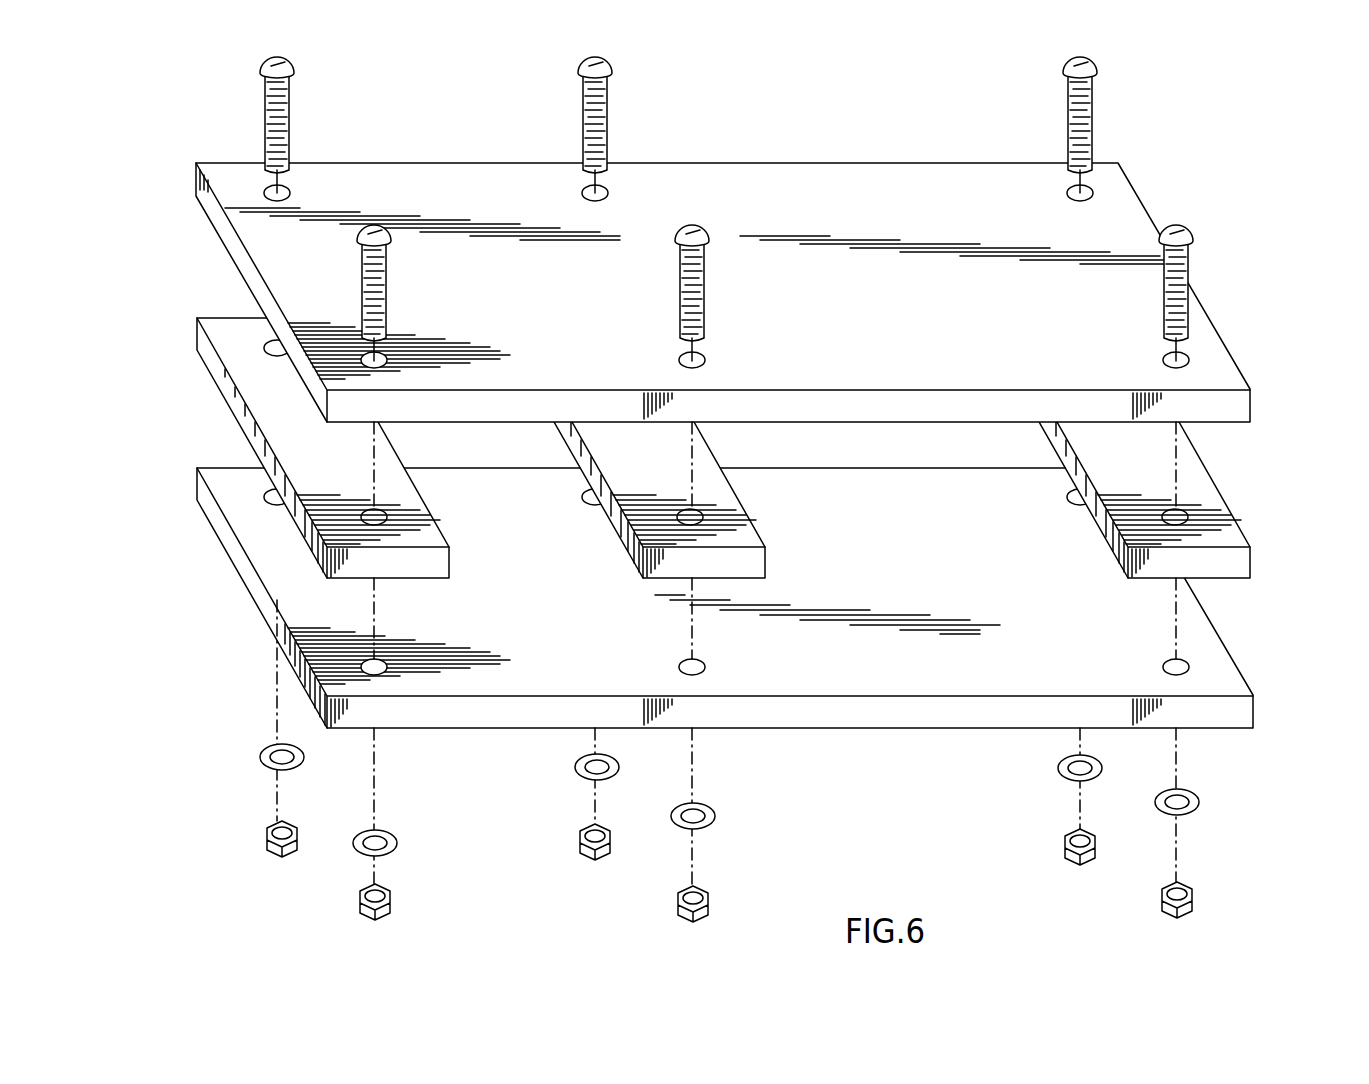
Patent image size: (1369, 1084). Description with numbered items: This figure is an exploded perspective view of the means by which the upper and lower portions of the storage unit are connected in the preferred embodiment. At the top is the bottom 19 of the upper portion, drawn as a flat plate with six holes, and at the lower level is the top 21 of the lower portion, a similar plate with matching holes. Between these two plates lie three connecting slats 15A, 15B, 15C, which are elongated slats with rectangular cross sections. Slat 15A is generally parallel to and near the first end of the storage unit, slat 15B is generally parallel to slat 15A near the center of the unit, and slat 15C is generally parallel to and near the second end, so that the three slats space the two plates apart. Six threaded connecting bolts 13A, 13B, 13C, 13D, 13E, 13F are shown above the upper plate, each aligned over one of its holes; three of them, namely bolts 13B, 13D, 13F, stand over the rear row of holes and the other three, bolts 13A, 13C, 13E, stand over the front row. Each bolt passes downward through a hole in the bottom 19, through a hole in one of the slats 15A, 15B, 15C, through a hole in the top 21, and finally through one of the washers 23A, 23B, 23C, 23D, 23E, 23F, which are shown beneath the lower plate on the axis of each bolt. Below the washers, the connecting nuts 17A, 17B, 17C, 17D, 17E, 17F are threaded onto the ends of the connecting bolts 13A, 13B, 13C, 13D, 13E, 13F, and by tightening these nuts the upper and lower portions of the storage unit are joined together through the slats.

The threaded connecting bolt 13A is at (390, 236).
The threaded connecting bolt 13B is at (288, 60).
The threaded connecting bolt 13C is at (708, 237).
The threaded connecting bolt 13D is at (606, 60).
The threaded connecting bolt 13E is at (1192, 232).
The threaded connecting bolt 13F is at (1091, 60).
The connecting slat 15A is at (425, 571).
The connecting slat 15B is at (755, 563).
The connecting slat 15C is at (1232, 558).
The connecting nut 17A is at (362, 906).
The connecting nut 17B is at (268, 841).
The connecting nut 17C is at (703, 907).
The connecting nut 17D is at (583, 852).
The connecting nut 17E is at (1197, 896).
The connecting nut 17F is at (1068, 853).
The bottom of upper portion 19 is at (858, 203).
The top of lower portion 21 is at (875, 522).
The washer 23A is at (396, 847).
The washer 23B is at (262, 756).
The washer 23C is at (710, 807).
The washer 23D is at (576, 764).
The washer 23E is at (1200, 802).
The washer 23F is at (1058, 764).